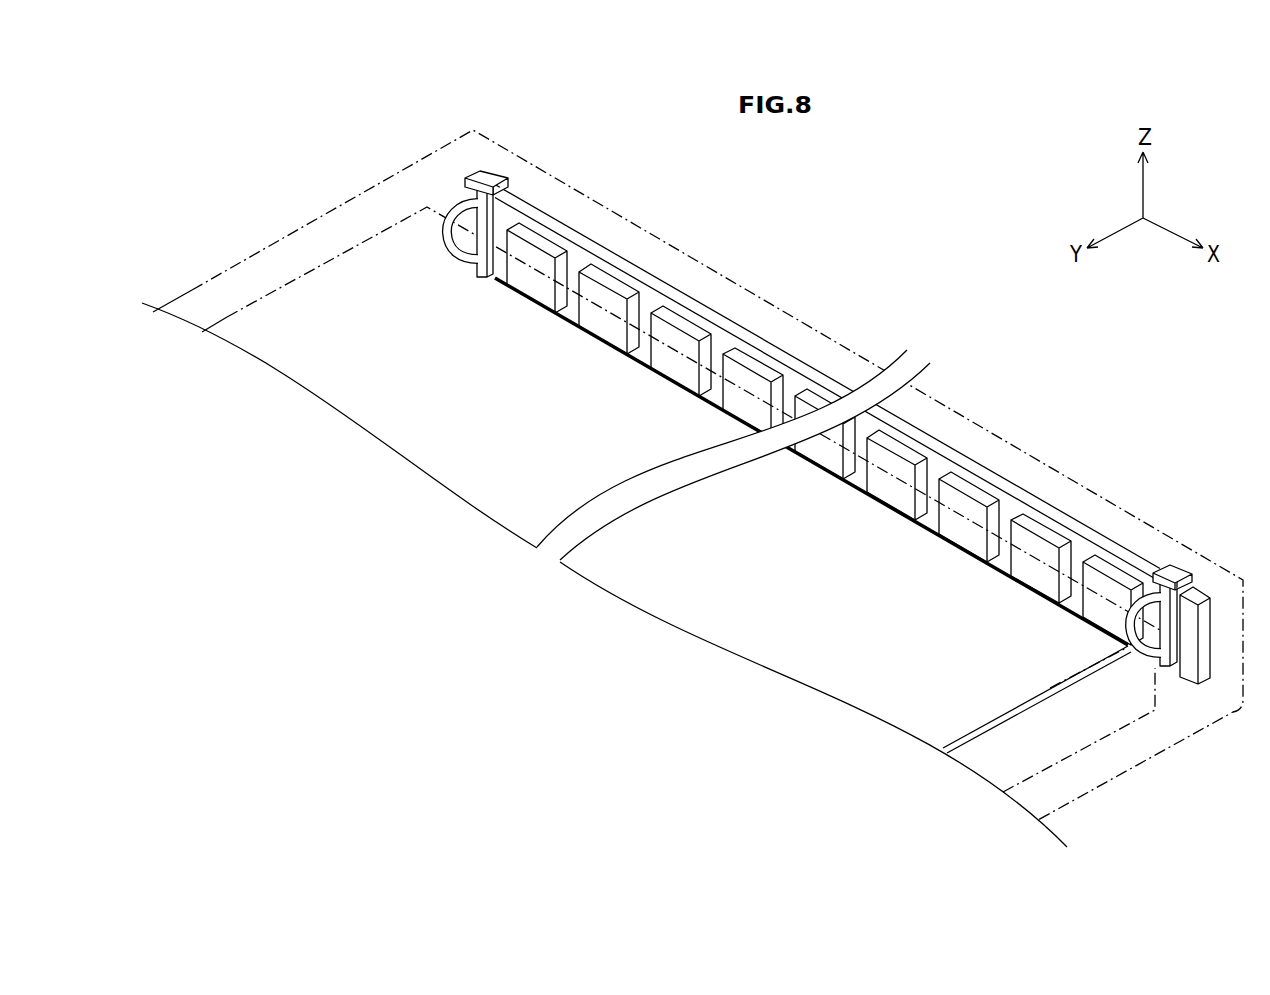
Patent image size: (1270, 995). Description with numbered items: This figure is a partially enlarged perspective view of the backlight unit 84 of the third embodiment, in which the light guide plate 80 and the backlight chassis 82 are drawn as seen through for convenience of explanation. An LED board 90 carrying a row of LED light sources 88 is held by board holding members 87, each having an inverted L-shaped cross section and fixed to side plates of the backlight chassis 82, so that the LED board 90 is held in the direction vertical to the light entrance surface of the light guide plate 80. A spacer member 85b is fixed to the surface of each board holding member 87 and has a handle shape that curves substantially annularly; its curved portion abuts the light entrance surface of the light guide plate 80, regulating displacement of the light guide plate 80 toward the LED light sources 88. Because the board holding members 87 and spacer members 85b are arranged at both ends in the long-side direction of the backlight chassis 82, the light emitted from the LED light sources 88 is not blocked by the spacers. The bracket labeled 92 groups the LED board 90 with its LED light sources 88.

The light guide plate 80 is at (325, 310).
The backlight chassis 82 is at (343, 202).
The backlight unit 84 is at (870, 264).
The spacer member 85b is at (455, 215).
The board holding member 87 is at (473, 176).
The LED light source 88 is at (958, 507).
The LED board 90 is at (1083, 553).
The block assembly 92 is at (827, 415).